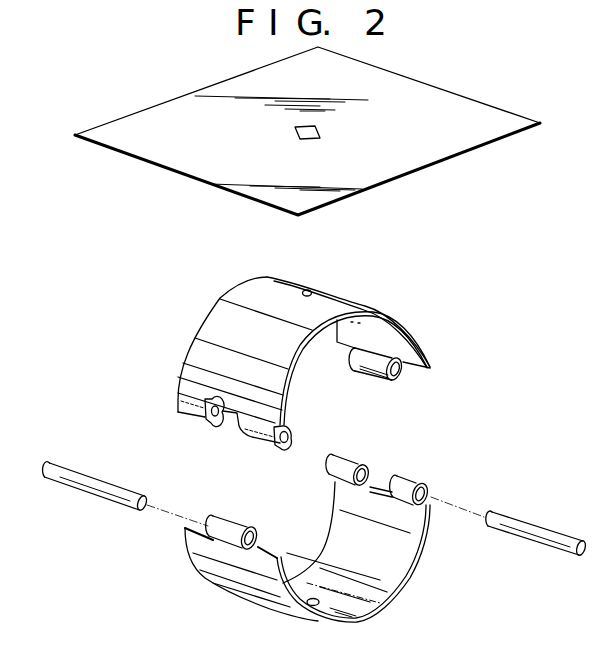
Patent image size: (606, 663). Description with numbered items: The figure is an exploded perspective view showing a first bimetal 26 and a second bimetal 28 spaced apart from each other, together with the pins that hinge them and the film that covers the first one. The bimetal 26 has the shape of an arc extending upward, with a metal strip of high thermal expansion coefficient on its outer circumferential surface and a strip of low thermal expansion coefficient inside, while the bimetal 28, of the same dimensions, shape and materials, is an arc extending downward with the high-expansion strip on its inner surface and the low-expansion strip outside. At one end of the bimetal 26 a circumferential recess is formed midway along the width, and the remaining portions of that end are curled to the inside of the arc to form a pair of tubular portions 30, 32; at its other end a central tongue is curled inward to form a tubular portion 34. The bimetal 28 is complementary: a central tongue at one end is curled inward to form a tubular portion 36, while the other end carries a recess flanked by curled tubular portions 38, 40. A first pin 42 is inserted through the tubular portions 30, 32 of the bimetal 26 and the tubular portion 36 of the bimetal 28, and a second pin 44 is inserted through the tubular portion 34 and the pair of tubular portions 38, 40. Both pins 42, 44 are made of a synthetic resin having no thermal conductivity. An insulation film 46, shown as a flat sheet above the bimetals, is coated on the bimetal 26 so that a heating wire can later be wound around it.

The bimetal 26 is at (340, 308).
The bimetal 28 is at (393, 598).
The tubular portion 30 is at (197, 418).
The tubular portion 32 is at (258, 441).
The tubular portion 34 is at (362, 372).
The tubular portion 36 is at (243, 527).
The tubular portion 38 is at (344, 462).
The tubular portion 40 is at (403, 479).
The first pin 42 is at (105, 486).
The second pin 44 is at (533, 527).
The insulation film 46 is at (448, 150).